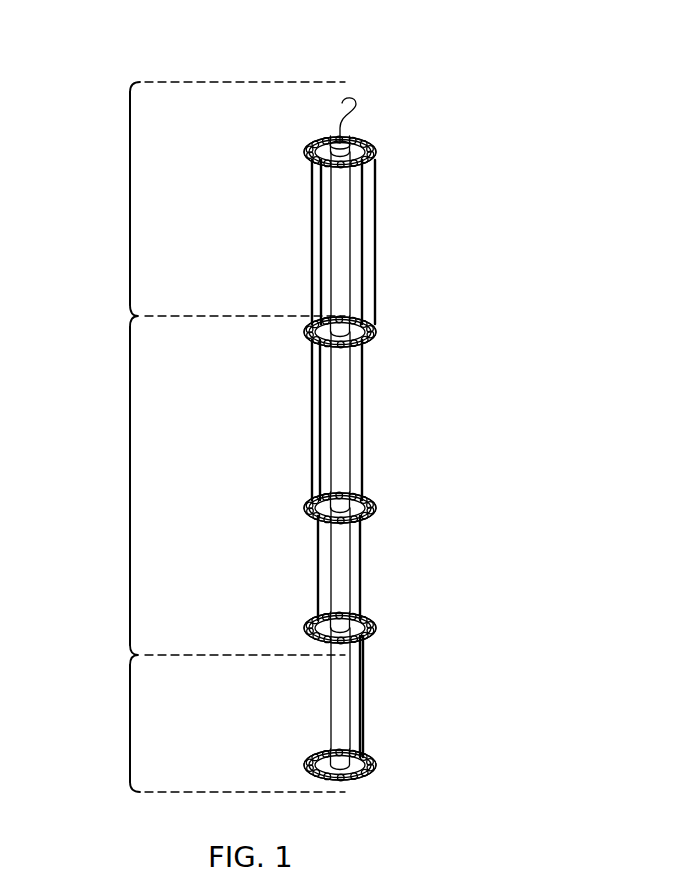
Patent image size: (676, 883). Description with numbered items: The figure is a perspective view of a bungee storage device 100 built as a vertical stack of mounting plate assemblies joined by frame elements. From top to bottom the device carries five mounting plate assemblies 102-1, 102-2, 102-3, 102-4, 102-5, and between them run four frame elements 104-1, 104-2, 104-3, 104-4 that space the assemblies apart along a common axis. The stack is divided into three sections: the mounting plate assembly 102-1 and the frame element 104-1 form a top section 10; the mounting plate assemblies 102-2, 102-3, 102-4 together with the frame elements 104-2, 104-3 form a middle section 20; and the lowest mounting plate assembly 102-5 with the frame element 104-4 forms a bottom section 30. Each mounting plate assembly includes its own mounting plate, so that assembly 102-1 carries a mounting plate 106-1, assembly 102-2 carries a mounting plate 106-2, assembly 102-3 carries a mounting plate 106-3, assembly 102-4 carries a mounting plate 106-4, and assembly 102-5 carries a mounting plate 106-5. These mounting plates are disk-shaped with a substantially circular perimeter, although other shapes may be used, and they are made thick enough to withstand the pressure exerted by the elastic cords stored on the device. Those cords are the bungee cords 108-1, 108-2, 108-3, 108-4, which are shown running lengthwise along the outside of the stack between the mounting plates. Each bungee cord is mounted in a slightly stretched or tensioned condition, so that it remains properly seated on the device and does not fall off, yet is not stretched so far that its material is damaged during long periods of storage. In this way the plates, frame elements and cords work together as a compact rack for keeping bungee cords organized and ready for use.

The bungee storage device 100 is at (352, 38).
The top section 10 is at (130, 202).
The middle section 20 is at (130, 490).
The bottom section 30 is at (130, 725).
The mounting plate assembly 102-1 is at (376, 140).
The mounting plate assembly 102-2 is at (383, 323).
The mounting plate assembly 102-3 is at (383, 501).
The mounting plate assembly 102-4 is at (383, 621).
The mounting plate assembly 102-5 is at (383, 758).
The frame element 104-1 is at (336, 245).
The frame element 104-2 is at (351, 420).
The frame element 104-3 is at (350, 580).
The frame element 104-4 is at (332, 700).
The mounting plate 106-1 is at (315, 142).
The mounting plate 106-2 is at (366, 350).
The mounting plate 106-3 is at (370, 524).
The mounting plate 106-4 is at (370, 646).
The mounting plate 106-5 is at (314, 748).
The bungee cord 108-1 is at (378, 232).
The bungee cord 108-2 is at (318, 390).
The bungee cord 108-3 is at (318, 570).
The bungee cord 108-4 is at (362, 706).